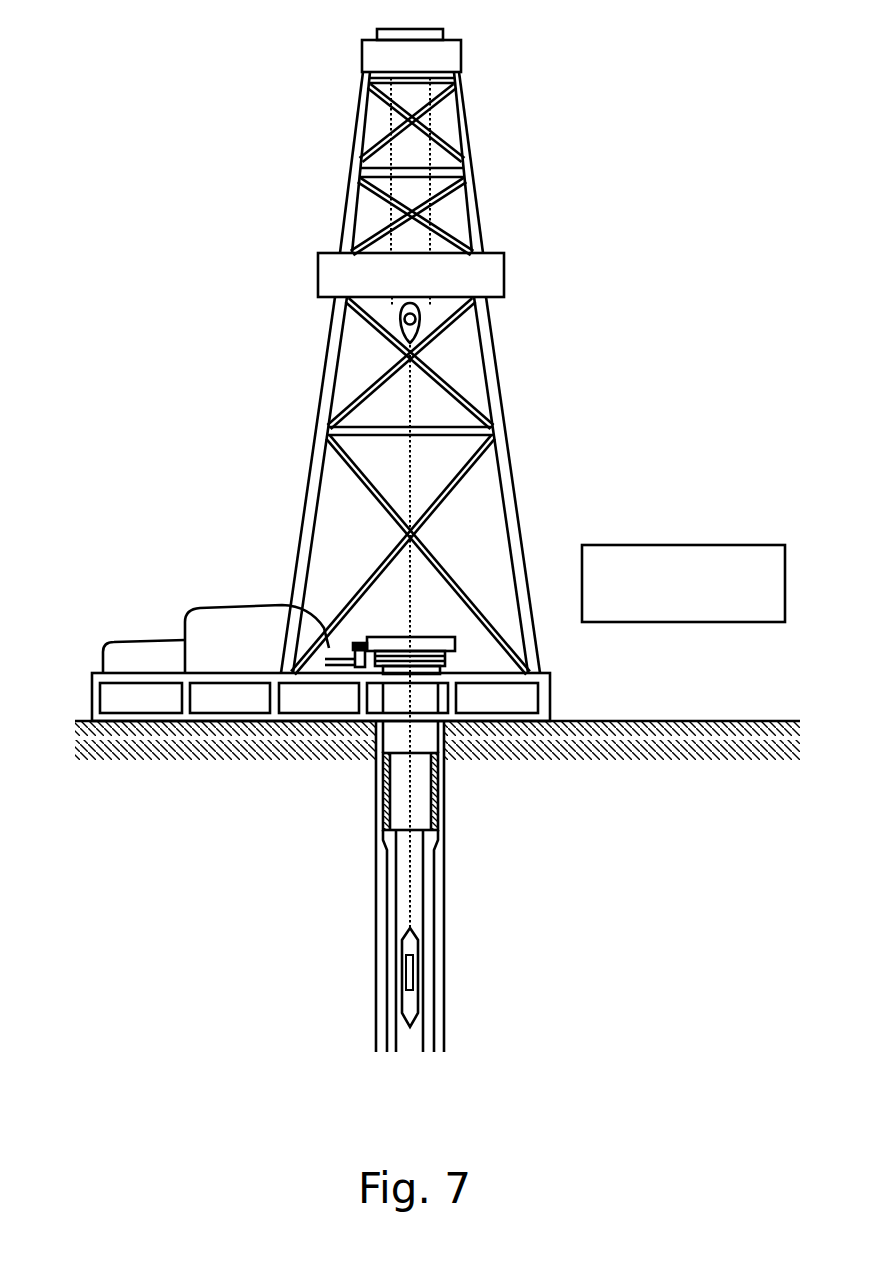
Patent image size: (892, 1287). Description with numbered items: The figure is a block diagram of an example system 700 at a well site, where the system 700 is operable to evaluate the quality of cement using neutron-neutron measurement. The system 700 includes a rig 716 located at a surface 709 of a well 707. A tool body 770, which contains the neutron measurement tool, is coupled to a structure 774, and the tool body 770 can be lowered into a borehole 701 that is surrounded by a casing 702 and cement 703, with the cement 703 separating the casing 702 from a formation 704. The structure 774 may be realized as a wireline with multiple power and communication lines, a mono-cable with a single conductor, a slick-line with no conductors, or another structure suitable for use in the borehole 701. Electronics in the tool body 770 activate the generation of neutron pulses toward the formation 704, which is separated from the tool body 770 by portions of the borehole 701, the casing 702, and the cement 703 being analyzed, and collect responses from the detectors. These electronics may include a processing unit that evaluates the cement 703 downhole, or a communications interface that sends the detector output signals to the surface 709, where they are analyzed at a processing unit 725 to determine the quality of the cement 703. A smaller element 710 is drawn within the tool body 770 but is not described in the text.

The system 700 is at (224, 88).
The rig 716 is at (318, 275).
The processing unit 725 is at (687, 545).
The surface 709 is at (633, 721).
The formation 704 is at (712, 885).
The well 707 is at (375, 847).
The cement 703 is at (440, 933).
The casing 702 is at (428, 859).
The borehole 701 is at (400, 915).
The structure 774 is at (407, 883).
The tool body 770 is at (408, 998).
The sensor 710 is at (408, 970).